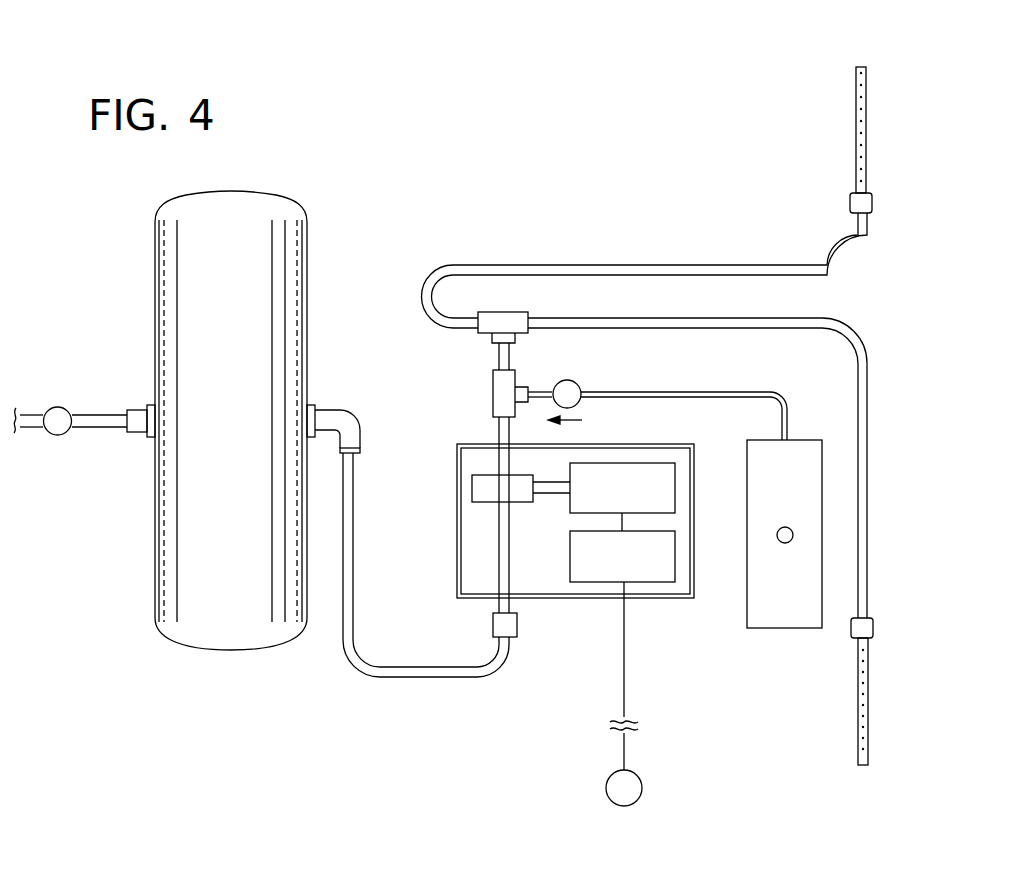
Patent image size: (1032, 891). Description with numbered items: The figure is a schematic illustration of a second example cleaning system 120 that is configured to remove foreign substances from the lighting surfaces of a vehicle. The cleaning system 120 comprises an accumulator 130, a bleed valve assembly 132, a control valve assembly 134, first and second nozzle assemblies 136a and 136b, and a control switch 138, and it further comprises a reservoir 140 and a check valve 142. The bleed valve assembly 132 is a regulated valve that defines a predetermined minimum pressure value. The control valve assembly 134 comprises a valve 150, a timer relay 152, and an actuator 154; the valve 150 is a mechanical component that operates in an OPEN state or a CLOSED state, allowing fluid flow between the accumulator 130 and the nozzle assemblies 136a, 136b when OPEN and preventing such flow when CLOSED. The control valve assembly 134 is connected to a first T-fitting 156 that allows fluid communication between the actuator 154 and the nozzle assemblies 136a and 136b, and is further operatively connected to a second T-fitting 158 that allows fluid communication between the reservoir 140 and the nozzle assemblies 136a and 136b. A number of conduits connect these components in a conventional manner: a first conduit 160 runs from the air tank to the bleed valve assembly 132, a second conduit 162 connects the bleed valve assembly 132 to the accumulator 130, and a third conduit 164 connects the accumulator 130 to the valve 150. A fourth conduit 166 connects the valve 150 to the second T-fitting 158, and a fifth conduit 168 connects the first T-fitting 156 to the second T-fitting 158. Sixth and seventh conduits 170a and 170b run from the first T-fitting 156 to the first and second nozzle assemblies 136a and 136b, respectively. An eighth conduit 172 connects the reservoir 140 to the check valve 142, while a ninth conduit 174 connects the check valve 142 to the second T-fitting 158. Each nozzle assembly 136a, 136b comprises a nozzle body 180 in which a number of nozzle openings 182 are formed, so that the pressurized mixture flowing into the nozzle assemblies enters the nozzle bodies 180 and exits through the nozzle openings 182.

The second example cleaning system 120 is at (388, 176).
The accumulator 130 is at (170, 293).
The bleed valve assembly 132 is at (58, 407).
The control valve assembly 134 is at (448, 460).
The first nozzle assembly 136a is at (853, 69).
The second nozzle assembly 136b is at (854, 761).
The control switch 138 is at (606, 790).
The reservoir 140 is at (768, 620).
The check valve 142 is at (580, 382).
The valve 150 is at (473, 497).
The timer relay 152 is at (665, 577).
The actuator 154 is at (635, 463).
The first T-fitting 156 is at (510, 313).
The second T-fitting 158 is at (494, 390).
The first conduit 160 is at (30, 427).
The second conduit 162 is at (97, 427).
The third conduit 164 is at (442, 677).
The fourth conduit 166 is at (499, 432).
The fifth conduit 168 is at (498, 358).
The sixth conduit 170a is at (686, 266).
The seventh conduit 170b is at (770, 318).
The eighth conduit 172 is at (750, 392).
The ninth conduit 174 is at (542, 392).
The nozzle body 180 is at (855, 113).
The nozzle openings 182 is at (855, 161).